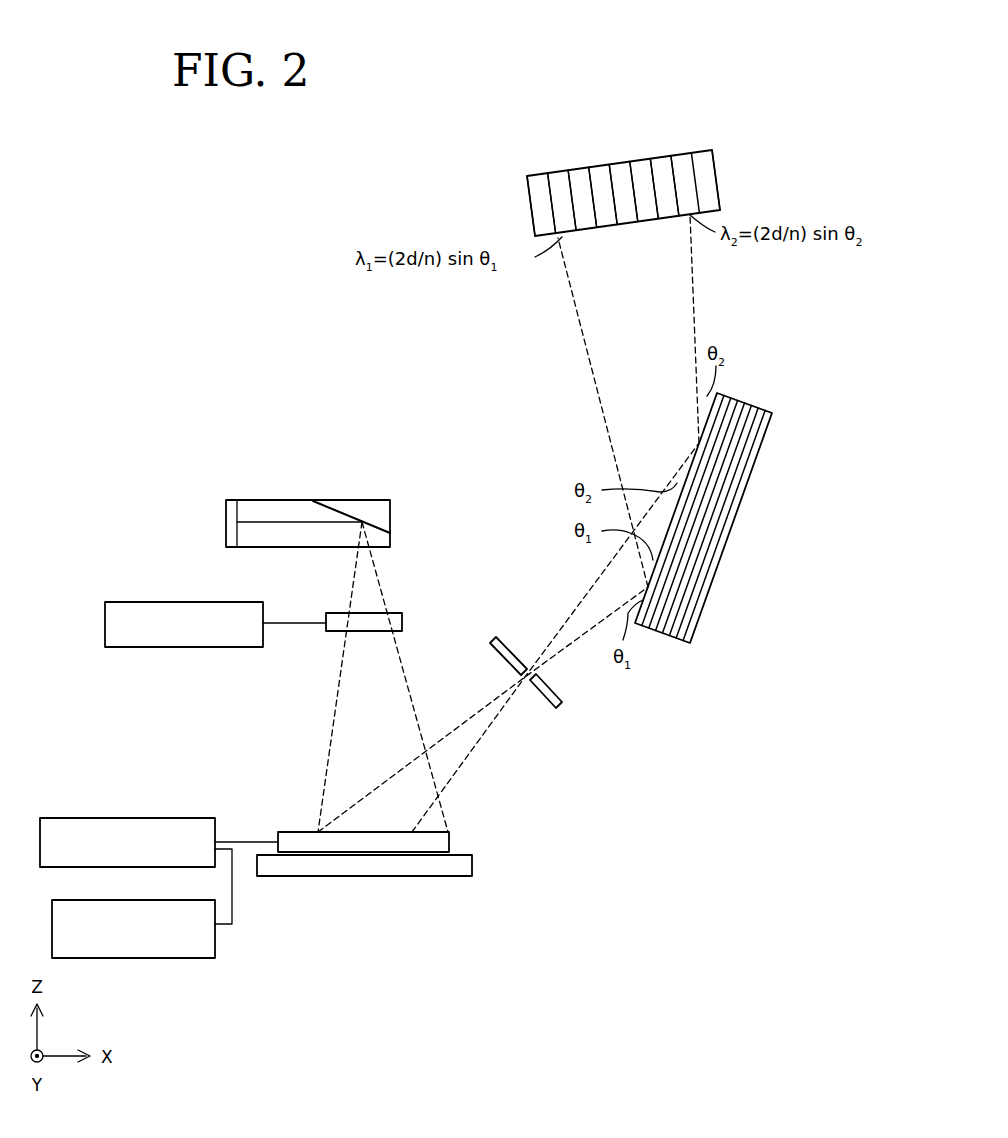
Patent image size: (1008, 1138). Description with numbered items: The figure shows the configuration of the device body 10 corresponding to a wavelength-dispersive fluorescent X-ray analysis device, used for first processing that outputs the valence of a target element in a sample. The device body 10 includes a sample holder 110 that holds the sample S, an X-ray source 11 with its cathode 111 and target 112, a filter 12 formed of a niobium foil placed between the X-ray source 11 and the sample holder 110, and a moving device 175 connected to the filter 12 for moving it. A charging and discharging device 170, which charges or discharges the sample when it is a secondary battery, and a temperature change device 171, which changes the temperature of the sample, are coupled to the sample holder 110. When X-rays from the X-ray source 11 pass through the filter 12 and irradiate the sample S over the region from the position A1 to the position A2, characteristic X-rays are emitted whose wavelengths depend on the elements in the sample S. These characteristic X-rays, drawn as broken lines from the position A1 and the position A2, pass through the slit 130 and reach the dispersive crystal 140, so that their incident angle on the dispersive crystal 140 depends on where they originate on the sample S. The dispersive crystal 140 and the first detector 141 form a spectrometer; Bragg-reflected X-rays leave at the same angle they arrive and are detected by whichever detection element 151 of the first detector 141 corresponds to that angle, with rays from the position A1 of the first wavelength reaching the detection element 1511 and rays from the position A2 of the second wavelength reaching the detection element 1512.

The device body 10 is at (860, 107).
The X-ray source 11 is at (289, 500).
The cathode 111 is at (232, 500).
The target (anode) 112 is at (375, 521).
The filter 12 is at (402, 622).
The moving device 175 is at (203, 602).
The sample holder 110 is at (472, 862).
The slit 130 is at (540, 708).
The dispersive crystal 140 is at (705, 528).
The first detector 141 is at (718, 175).
The detection element 151 is at (600, 170).
The detection element 1511 is at (557, 178).
The detection element 1512 is at (682, 163).
The charging and discharging device 170 is at (157, 818).
The temperature change device 171 is at (157, 900).
The sample S is at (370, 832).
The position A1 is at (318, 832).
The position A2 is at (412, 832).